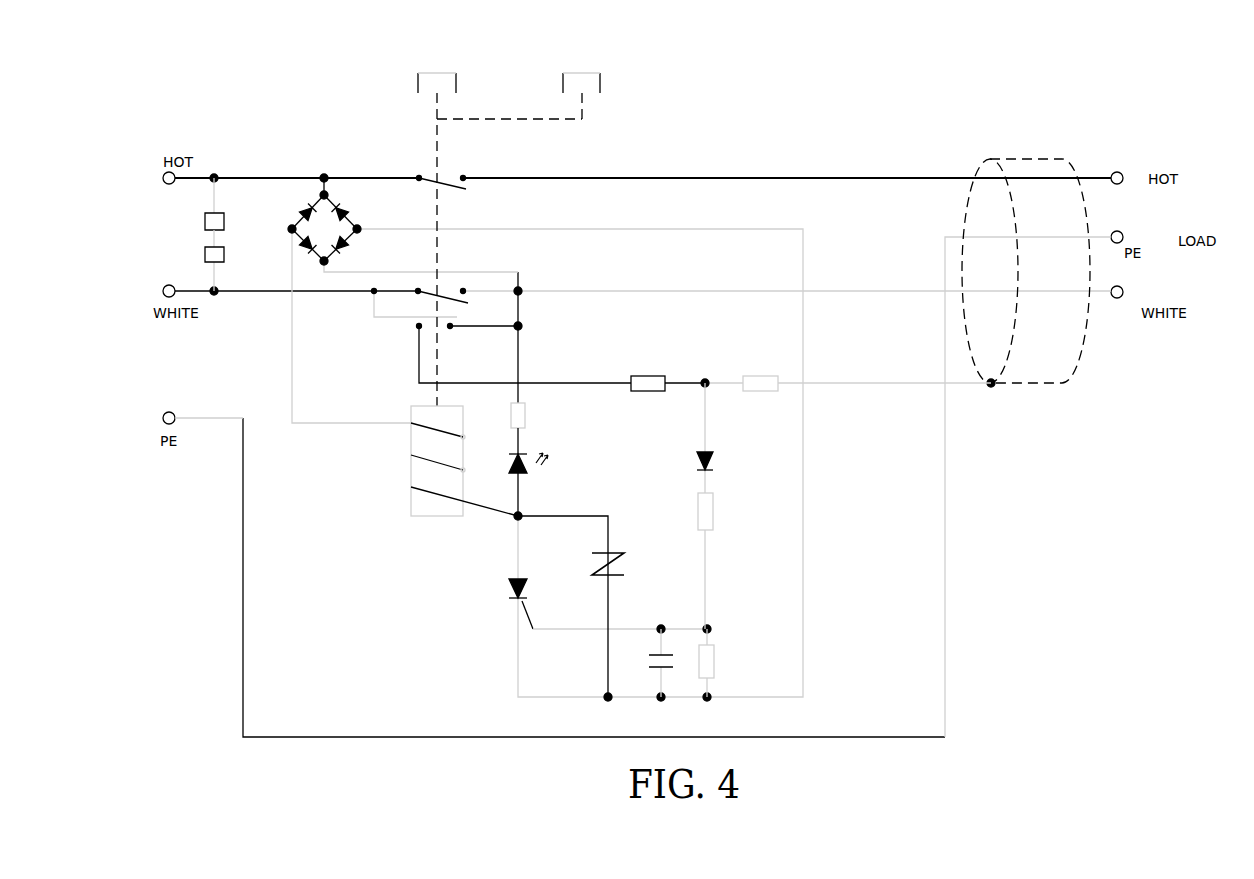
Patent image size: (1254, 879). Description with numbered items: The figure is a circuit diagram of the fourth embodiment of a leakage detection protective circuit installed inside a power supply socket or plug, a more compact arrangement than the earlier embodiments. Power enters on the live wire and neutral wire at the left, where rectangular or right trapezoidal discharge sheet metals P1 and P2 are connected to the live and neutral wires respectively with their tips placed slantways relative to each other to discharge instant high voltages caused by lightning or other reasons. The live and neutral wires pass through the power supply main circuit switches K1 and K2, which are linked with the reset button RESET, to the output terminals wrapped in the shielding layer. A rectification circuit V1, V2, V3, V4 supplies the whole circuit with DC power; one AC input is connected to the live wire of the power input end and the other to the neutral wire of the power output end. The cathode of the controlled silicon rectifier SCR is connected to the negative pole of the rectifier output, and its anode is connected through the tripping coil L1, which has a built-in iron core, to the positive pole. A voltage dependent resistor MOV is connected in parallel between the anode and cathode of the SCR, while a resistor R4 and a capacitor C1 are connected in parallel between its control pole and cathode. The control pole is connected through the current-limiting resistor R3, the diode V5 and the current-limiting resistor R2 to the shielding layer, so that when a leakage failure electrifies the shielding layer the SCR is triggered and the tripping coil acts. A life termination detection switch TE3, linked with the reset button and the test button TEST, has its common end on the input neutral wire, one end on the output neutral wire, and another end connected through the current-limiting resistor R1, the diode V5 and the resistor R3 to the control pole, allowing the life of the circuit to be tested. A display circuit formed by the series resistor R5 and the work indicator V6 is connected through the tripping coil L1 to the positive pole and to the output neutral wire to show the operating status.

The reset button RESET is at (492, 226).
The test button TEST is at (581, 70).
The power supply main circuit switch K1 is at (443, 170).
The power supply main circuit switch K2 is at (443, 289).
The life termination detection switch TE3 is at (506, 354).
The discharge sheet metal P1 is at (227, 204).
The discharge sheet metal P2 is at (227, 260).
The rectification circuit diode V1 is at (305, 210).
The rectification circuit diode V2 is at (308, 252).
The rectification circuit diode V3 is at (349, 212).
The rectification circuit diode V4 is at (344, 250).
The tripping coil L1 is at (452, 467).
The series resistor R5 is at (531, 428).
The work indicator V6 is at (530, 484).
The controlled silicon rectifier SCR is at (610, 598).
The voltage dependent resistor MOV is at (593, 606).
The current-limiting resistor R1 is at (687, 371).
The current-limiting resistor R2 is at (867, 372).
The diode V5 is at (721, 438).
The current-limiting resistor R3 is at (718, 561).
The resistor R4 is at (719, 663).
The capacitor C1 is at (647, 663).